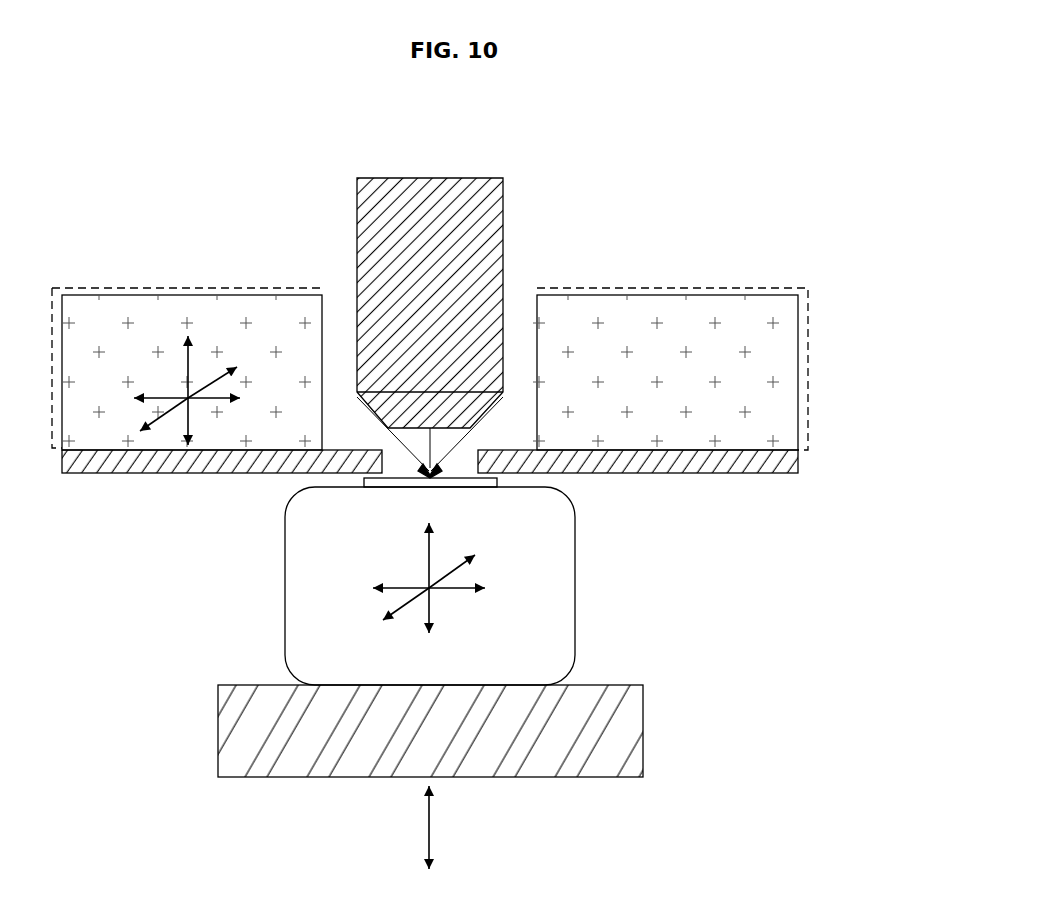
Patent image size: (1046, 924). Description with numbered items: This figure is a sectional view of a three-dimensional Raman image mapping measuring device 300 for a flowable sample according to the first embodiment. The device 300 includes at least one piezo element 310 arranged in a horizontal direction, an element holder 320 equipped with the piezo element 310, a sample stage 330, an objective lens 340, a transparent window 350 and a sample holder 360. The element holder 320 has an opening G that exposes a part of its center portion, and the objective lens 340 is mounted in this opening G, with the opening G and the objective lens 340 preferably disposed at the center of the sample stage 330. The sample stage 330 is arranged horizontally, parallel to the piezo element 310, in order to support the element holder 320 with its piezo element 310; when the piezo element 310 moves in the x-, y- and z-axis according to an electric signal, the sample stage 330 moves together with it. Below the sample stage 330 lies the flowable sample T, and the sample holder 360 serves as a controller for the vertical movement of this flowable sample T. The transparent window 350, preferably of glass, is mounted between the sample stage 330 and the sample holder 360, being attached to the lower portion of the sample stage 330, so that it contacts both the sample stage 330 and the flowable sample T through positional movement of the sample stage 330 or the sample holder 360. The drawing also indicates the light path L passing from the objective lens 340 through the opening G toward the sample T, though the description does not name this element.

The three-dimensional Raman image mapping measuring device 300 is at (462, 491).
The piezo element 310 is at (713, 294).
The element holder 320 is at (808, 369).
The sample stage 330 is at (797, 461).
The objective lens 340 is at (439, 178).
The transparent window 350 is at (364, 482).
The sample holder 360 is at (643, 730).
The opening G is at (523, 305).
The laser beam L is at (457, 452).
The flowable sample T is at (575, 578).